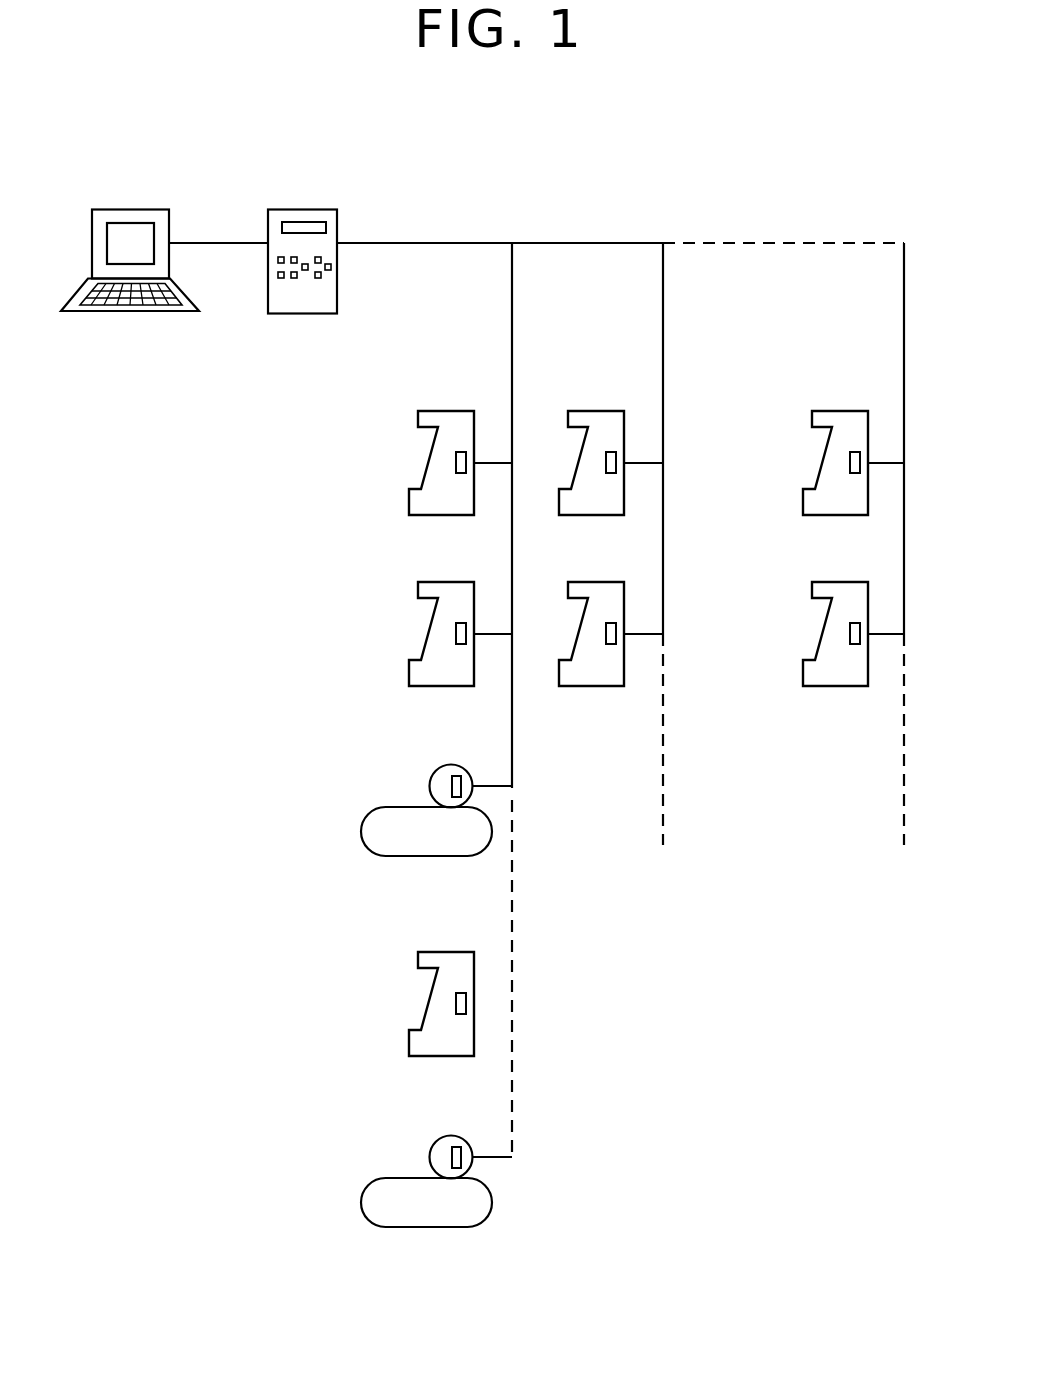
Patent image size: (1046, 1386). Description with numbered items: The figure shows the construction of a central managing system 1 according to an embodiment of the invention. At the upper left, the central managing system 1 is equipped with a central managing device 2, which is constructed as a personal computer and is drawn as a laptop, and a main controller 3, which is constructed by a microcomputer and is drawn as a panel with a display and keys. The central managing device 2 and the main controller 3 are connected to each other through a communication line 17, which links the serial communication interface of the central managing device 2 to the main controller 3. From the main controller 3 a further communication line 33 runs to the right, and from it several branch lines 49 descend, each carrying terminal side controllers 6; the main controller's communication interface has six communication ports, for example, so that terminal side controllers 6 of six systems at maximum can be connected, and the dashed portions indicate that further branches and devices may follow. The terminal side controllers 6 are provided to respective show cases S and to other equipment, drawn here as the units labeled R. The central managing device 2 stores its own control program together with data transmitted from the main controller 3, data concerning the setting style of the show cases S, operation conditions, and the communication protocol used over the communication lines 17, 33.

The central managing system 1 is at (579, 167).
The central managing device 2 is at (142, 208).
The main controller 3 is at (311, 208).
The communication line 17 is at (223, 243).
The communication line 33 is at (459, 243).
The branch line 49 is at (512, 552).
The terminal side controller 6 is at (462, 473).
The show case S is at (432, 453).
The relay R is at (361, 832).